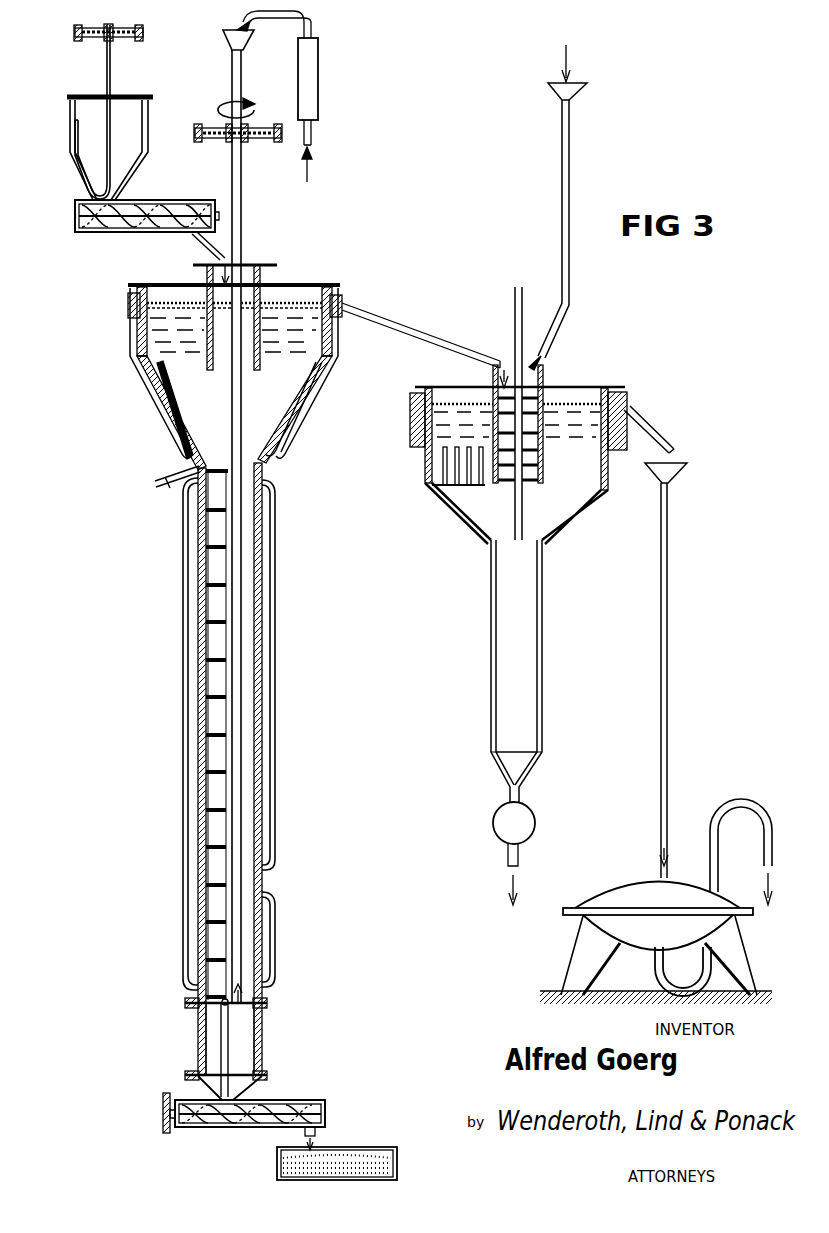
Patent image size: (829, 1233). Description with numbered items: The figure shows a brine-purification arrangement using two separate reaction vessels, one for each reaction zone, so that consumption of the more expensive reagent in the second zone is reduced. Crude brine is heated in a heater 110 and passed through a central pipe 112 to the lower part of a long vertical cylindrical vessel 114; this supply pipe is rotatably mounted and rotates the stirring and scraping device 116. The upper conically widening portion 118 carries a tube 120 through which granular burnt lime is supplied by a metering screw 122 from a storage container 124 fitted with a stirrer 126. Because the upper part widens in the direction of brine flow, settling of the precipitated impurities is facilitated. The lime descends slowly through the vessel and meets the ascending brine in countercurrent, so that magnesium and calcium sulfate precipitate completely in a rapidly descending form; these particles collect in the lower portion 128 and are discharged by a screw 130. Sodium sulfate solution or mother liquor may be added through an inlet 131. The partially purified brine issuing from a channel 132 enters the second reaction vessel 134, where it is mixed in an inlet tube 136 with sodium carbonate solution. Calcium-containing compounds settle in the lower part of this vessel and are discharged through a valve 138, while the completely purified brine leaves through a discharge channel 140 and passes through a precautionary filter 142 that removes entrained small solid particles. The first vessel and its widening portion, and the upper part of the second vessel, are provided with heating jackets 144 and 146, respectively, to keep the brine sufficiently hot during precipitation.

The heater 110 is at (318, 48).
The central pipe 112 is at (242, 193).
The long vertical cylindrical vessel 114 is at (263, 572).
The stirring and scraping device 116 is at (210, 774).
The upper conically widening portion 118 is at (300, 410).
The tube 120 is at (262, 272).
The metering screw 122 is at (126, 233).
The storage container 124 is at (132, 102).
The stirrer 126 is at (86, 176).
The lower portion 128 is at (246, 1056).
The screw 130 is at (312, 1100).
The inlet 131 is at (167, 488).
The channel 132 is at (128, 311).
The second reaction vessel 134 is at (531, 608).
The inlet tube 136 is at (543, 384).
The valve 138 is at (531, 810).
The discharge channel 140 is at (627, 399).
The precautionary filter 142 is at (591, 920).
The heating jacket 144 is at (150, 410).
The heating jacket 146 is at (425, 441).